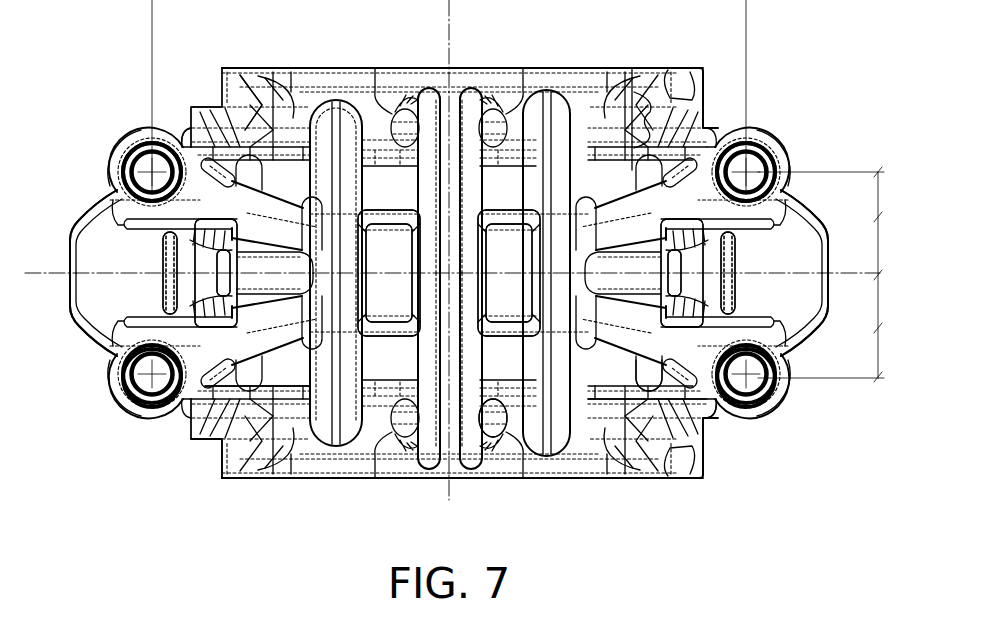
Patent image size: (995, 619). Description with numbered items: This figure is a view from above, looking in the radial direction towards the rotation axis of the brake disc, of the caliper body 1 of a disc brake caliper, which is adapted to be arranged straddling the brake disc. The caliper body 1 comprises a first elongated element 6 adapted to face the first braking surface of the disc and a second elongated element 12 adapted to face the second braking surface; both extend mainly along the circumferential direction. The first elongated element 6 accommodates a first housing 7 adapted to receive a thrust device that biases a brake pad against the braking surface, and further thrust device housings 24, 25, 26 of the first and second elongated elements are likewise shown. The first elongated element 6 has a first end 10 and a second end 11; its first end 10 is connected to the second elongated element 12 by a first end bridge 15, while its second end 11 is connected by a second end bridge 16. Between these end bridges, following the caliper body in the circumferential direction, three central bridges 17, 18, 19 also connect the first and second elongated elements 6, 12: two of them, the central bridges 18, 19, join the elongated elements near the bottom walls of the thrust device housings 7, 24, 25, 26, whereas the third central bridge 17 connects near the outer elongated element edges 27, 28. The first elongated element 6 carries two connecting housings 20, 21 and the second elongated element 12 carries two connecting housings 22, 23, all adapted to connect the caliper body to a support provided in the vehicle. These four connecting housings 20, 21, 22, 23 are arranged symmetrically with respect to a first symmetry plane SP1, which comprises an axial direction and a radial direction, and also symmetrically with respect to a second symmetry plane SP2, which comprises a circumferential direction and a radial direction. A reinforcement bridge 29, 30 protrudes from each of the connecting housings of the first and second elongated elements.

The caliper body 1 is at (760, 73).
The first elongated element 6 is at (413, 478).
The first housing 7 is at (607, 435).
The first end of first elongated element 10 is at (668, 432).
The second end of first elongated element 11 is at (203, 442).
The second elongated element 12 is at (385, 72).
The first end bridge 15 is at (800, 256).
The second end bridge 16 is at (78, 300).
The central bridge 17 is at (488, 440).
The central bridge 18 is at (562, 440).
The central bridge 19 is at (346, 442).
The connecting housing of first elongated element 20 is at (775, 404).
The connecting housing of first elongated element 21 is at (132, 415).
The connecting housing of second elongated element 22 is at (772, 140).
The connecting housing of second elongated element 23 is at (115, 150).
The thrust device housing 24 is at (590, 105).
The thrust device housing 25 is at (290, 440).
The thrust device housing 26 is at (237, 67).
The outer elongated element edge 27 is at (534, 460).
The outer elongated element edge 28 is at (316, 66).
The reinforcement bridge 29 is at (185, 128).
The reinforcement bridge 30 is at (630, 108).
The first symmetry plane SP1 is at (452, 40).
The second symmetry plane SP2 is at (812, 394).